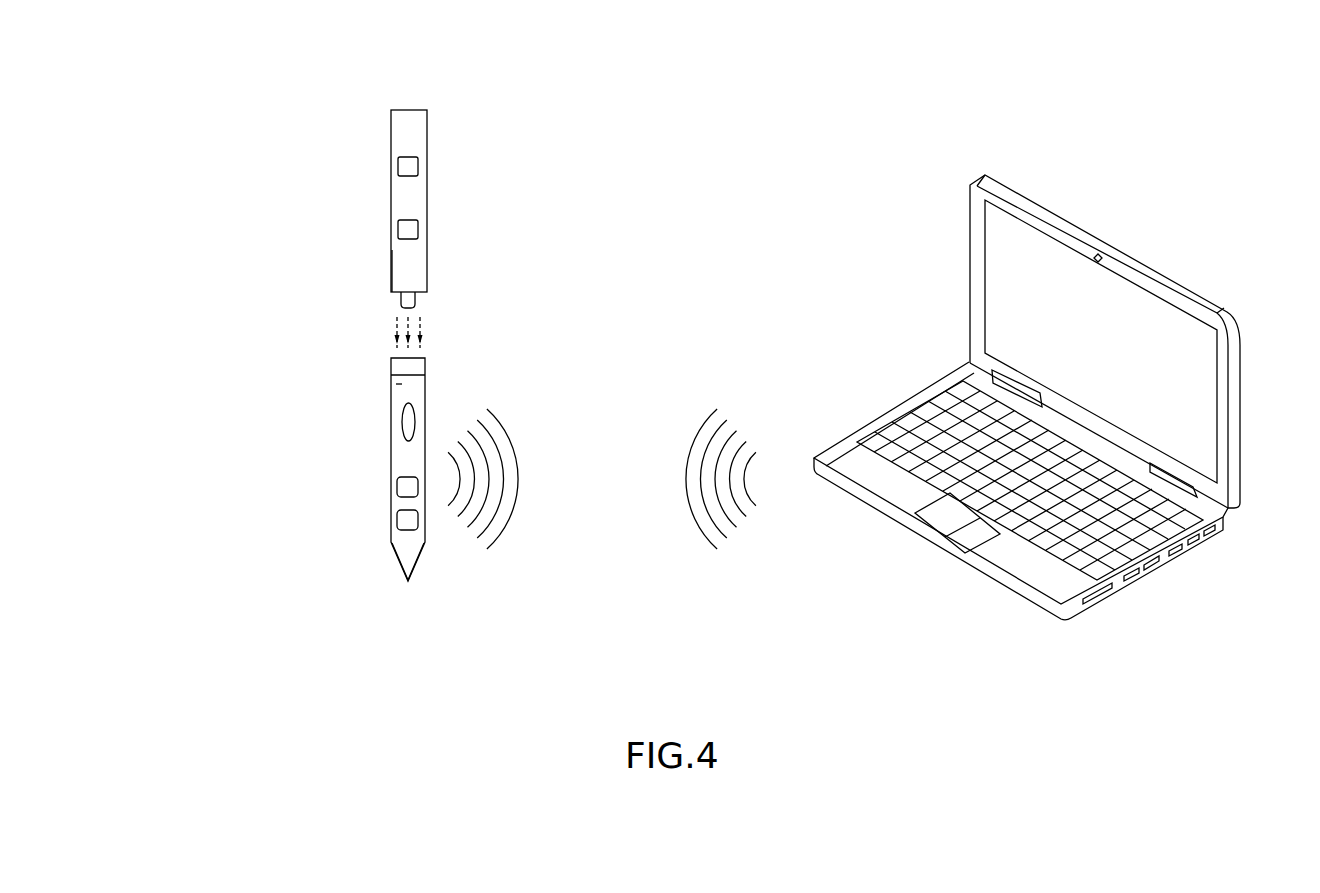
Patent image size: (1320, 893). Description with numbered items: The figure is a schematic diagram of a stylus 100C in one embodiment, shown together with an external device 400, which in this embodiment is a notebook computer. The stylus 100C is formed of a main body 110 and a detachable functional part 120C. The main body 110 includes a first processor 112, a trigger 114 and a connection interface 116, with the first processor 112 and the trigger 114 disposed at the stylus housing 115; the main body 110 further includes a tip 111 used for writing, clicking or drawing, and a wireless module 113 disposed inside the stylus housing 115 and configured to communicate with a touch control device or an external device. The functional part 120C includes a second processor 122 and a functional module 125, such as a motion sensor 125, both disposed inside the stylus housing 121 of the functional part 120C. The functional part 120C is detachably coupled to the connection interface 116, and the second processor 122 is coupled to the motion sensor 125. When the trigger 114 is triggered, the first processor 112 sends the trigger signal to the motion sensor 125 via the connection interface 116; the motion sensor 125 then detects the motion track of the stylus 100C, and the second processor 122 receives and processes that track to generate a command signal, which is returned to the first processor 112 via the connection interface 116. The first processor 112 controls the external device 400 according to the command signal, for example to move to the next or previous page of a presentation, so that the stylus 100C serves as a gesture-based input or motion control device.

The stylus 100C is at (265, 68).
The functional part 120C is at (292, 114).
The functional module (motion sensor) 125 is at (398, 165).
The second processor 122 is at (398, 228).
The stylus housing 121 is at (408, 273).
The main body 110 is at (291, 350).
The connection interface 116 is at (393, 361).
The stylus housing 115 is at (393, 382).
The trigger 114 is at (400, 418).
The wireless module 113 is at (397, 487).
The first processor 112 is at (397, 512).
The tip 111 is at (400, 557).
The external device 400 is at (970, 243).